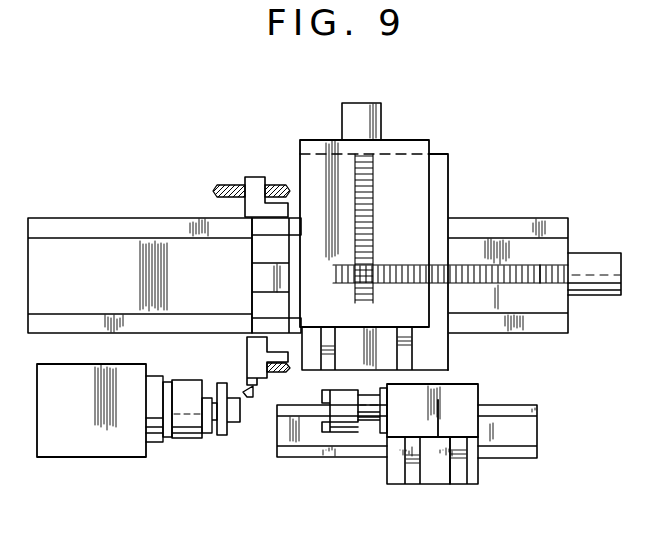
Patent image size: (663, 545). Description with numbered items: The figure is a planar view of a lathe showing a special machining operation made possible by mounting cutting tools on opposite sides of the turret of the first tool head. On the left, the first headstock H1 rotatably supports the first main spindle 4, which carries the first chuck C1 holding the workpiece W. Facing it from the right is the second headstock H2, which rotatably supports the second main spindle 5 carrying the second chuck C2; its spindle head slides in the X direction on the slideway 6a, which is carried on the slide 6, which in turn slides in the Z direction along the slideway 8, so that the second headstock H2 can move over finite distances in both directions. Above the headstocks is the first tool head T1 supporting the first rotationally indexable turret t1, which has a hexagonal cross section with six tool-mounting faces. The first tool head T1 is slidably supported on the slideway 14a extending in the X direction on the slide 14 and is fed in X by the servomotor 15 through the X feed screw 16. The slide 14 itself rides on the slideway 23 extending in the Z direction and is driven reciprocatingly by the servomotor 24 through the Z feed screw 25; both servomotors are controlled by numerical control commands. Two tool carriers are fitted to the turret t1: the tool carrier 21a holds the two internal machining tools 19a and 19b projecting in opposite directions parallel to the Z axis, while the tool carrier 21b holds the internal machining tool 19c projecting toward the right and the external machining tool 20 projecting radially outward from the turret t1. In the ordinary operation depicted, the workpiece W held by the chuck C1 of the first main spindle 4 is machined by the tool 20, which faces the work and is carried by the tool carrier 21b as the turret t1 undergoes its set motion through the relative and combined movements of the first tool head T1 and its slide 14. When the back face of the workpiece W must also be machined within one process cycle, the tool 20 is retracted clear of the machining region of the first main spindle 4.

The first main spindle 4 is at (168, 438).
The second main spindle 5 is at (372, 427).
The slide 6 is at (472, 465).
The slideway 6a is at (413, 477).
The slideway 8 is at (285, 455).
The slide 14 is at (443, 202).
The slideway 14a is at (402, 355).
The servomotor 15 is at (381, 112).
The X feed screw 16 is at (373, 206).
The internal machining tool 19a is at (276, 185).
The internal machining tool 19b is at (215, 191).
The internal machining tool 19c is at (277, 373).
The external machining tool 20 is at (248, 398).
The tool carrier 21a is at (255, 176).
The tool carrier 21b is at (253, 358).
The slideway 23 is at (540, 218).
The servomotor 24 is at (600, 270).
The Z feed screw 25 is at (548, 276).
The first tool head T1 is at (316, 172).
The first rotationally indexable turret t1 is at (262, 284).
The first headstock H1 is at (63, 437).
The second headstock H2 is at (457, 402).
The first chuck C1 is at (188, 440).
The second chuck C2 is at (340, 432).
The workpiece W is at (222, 437).